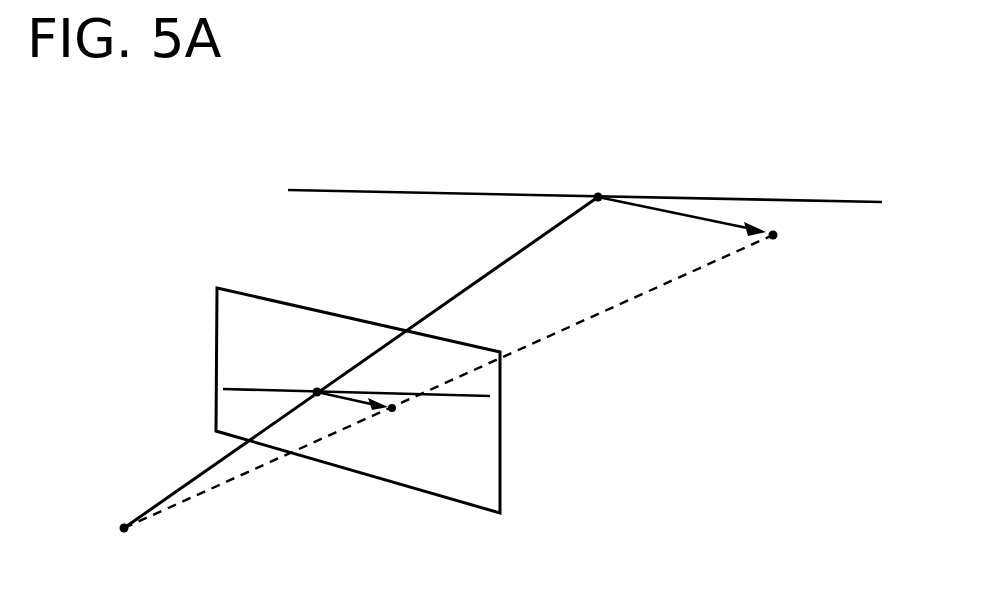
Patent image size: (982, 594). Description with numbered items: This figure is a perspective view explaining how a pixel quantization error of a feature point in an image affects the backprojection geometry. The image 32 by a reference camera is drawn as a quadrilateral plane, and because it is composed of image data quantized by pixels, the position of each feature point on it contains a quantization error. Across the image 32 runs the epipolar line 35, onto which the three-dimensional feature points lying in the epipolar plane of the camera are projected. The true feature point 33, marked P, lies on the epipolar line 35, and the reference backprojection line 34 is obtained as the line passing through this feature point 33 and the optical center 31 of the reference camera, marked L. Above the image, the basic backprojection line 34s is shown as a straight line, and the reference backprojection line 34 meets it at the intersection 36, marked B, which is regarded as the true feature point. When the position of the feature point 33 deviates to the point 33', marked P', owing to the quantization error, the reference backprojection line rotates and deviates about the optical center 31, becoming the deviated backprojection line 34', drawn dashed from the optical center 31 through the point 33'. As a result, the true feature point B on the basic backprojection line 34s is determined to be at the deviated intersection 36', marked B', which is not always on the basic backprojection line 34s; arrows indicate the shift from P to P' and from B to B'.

The optical center 31 is at (124, 524).
The image 32 is at (217, 283).
The feature point 33 is at (296, 453).
The deviated feature point 33' is at (378, 479).
The reference backprojection line 34 is at (361, 362).
The deviated reference backprojection line 34' is at (448, 381).
The basic backprojection line 34s is at (337, 189).
The epipolar line 35 is at (233, 386).
The intersection 36 is at (616, 155).
The deviated intersection 36' is at (711, 197).